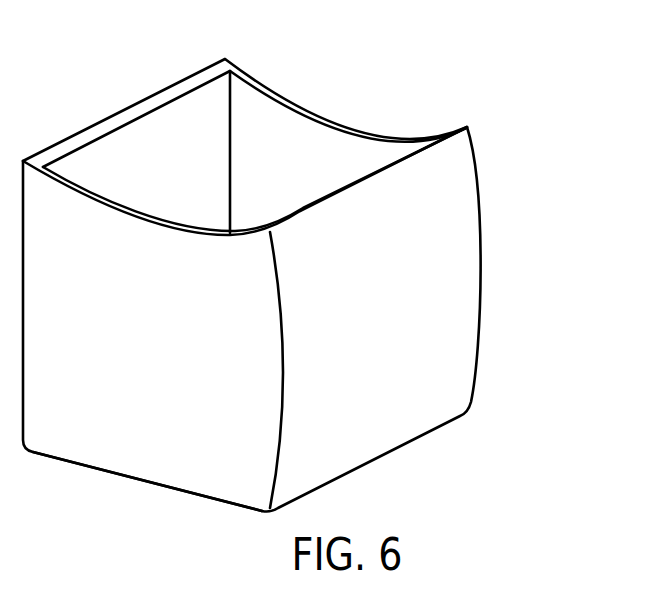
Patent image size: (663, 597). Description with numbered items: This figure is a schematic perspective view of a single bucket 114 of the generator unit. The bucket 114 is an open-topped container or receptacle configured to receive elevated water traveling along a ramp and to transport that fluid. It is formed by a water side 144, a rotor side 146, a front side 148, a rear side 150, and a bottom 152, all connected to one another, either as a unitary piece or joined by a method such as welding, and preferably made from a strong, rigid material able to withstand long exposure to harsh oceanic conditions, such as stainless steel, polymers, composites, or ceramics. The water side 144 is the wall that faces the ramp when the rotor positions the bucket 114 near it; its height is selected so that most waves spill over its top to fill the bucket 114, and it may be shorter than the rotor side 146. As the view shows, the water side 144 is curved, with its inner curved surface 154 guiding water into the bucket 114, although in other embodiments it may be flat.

The bucket 114 is at (290, 290).
The water side 144 is at (435, 305).
The rotor side 146 is at (122, 150).
The front side 148 is at (130, 381).
The rear side 150 is at (321, 183).
The bottom 152 is at (165, 495).
The curved inner surface 154 is at (279, 137).